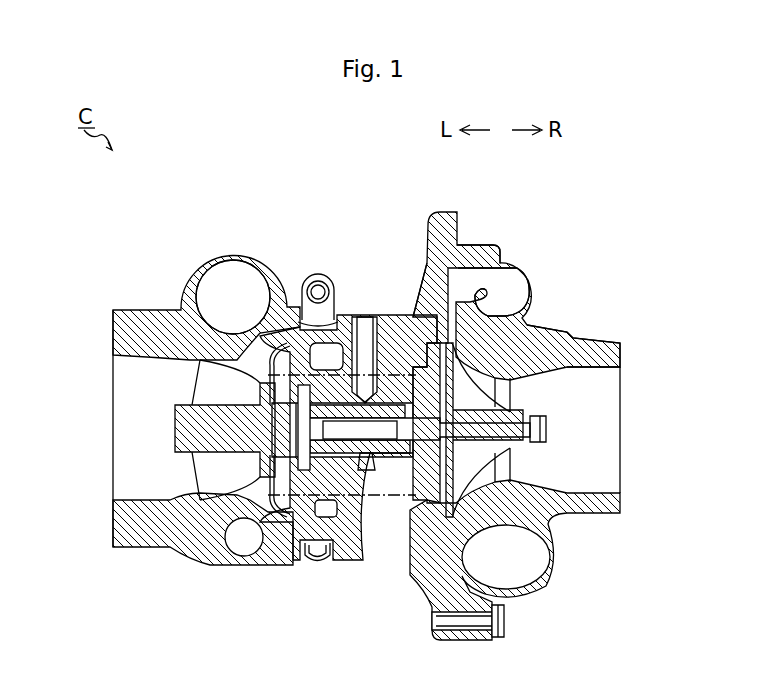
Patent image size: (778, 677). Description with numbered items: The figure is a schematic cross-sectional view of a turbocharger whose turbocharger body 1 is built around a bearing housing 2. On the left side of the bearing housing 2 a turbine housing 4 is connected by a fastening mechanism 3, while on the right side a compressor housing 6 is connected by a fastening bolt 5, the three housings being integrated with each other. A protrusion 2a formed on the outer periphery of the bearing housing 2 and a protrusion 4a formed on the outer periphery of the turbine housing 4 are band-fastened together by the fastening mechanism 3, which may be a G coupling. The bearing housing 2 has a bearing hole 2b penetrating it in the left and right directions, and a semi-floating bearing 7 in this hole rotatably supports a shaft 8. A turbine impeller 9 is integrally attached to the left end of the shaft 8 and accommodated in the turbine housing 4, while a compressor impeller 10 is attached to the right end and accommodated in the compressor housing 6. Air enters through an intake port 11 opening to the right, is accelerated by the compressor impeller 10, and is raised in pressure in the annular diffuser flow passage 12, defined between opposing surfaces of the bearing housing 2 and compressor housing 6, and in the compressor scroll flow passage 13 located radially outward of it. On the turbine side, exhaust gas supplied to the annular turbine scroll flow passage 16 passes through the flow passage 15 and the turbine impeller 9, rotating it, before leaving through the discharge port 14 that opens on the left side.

The turbocharger body 1 is at (118, 232).
The bearing housing 2 is at (448, 212).
The protrusion 2a is at (323, 560).
The bearing hole 2b is at (375, 453).
The fastening mechanism 3 is at (333, 297).
The turbine housing 4 is at (282, 263).
The protrusion 4a is at (308, 560).
The fastening bolt 5 is at (503, 622).
The compressor housing 6 is at (478, 243).
The semi-floating bearing 7 is at (394, 318).
The shaft 8 is at (362, 400).
The turbine impeller 9 is at (172, 547).
The compressor impeller 10 is at (556, 333).
The intake port 11 is at (620, 485).
The diffuser flow passage 12 is at (455, 300).
The compressor scroll flow passage 13 is at (510, 268).
The discharge port 14 is at (150, 355).
The flow passage 15 is at (247, 338).
The turbine scroll flow passage 16 is at (229, 272).